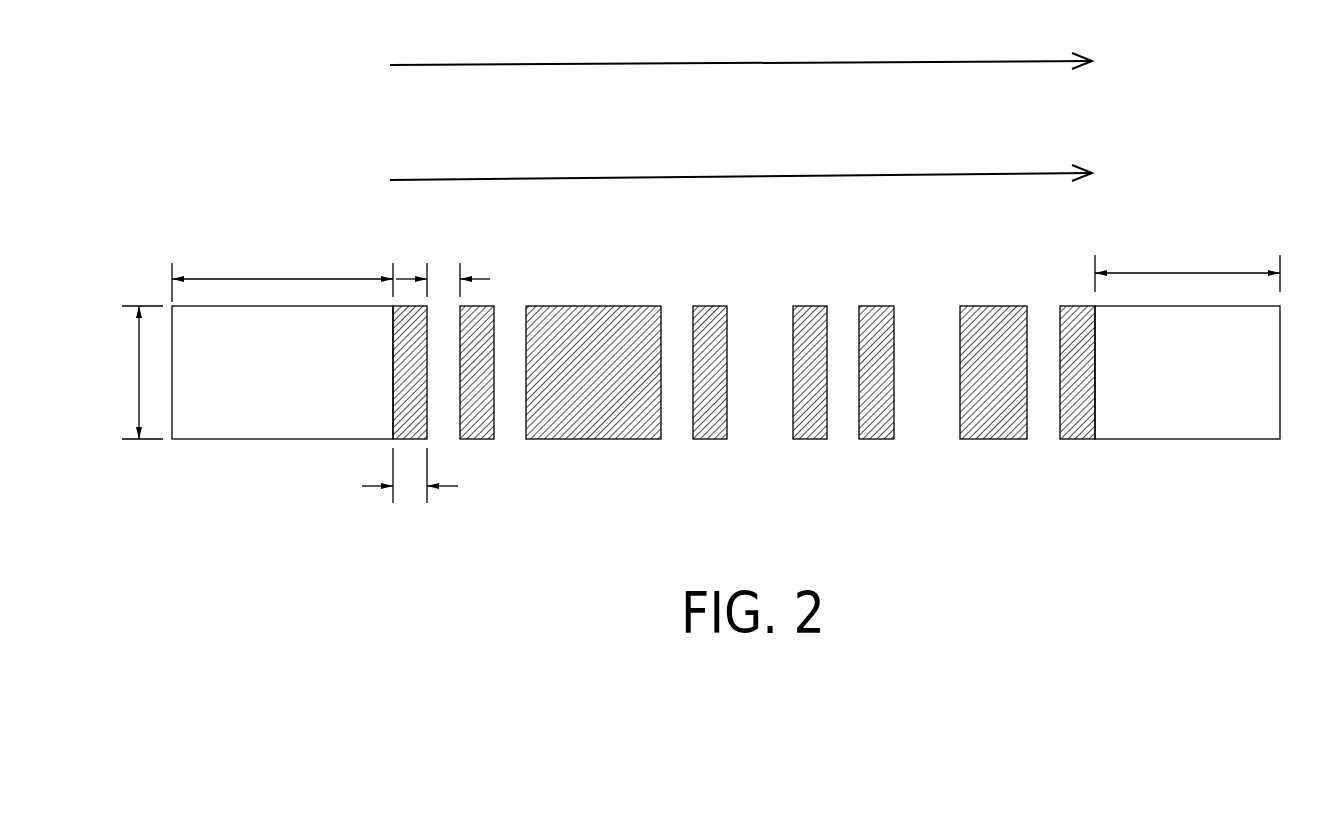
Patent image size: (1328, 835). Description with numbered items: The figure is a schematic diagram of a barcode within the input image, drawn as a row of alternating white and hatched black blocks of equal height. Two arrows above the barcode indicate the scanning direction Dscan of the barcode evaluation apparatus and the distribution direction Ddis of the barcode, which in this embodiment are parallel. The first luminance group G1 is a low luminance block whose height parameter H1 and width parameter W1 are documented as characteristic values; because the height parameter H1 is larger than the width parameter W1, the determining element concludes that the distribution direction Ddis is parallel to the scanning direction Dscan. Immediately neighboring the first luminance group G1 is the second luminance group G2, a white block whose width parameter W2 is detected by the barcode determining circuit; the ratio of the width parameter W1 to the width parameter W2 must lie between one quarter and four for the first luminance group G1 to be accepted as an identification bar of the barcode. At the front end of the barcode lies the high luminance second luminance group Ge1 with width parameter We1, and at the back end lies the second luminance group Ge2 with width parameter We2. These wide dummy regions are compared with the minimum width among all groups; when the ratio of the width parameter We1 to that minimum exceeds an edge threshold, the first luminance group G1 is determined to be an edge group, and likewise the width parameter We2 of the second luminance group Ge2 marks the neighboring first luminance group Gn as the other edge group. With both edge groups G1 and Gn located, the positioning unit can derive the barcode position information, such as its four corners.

The second luminance group Ge1 is at (252, 439).
The first luminance group G1 is at (397, 439).
The second luminance group G2 is at (440, 439).
The first luminance group Gn is at (1077, 439).
The second luminance group Ge2 is at (1185, 439).
The width parameter We1 is at (282, 276).
The width parameter We2 is at (1187, 267).
The width parameter W1 is at (410, 493).
The width parameter W2 is at (443, 263).
The height parameter H1 is at (130, 372).
The scanning direction Dscan is at (741, 42).
The distribution direction Ddis is at (741, 154).